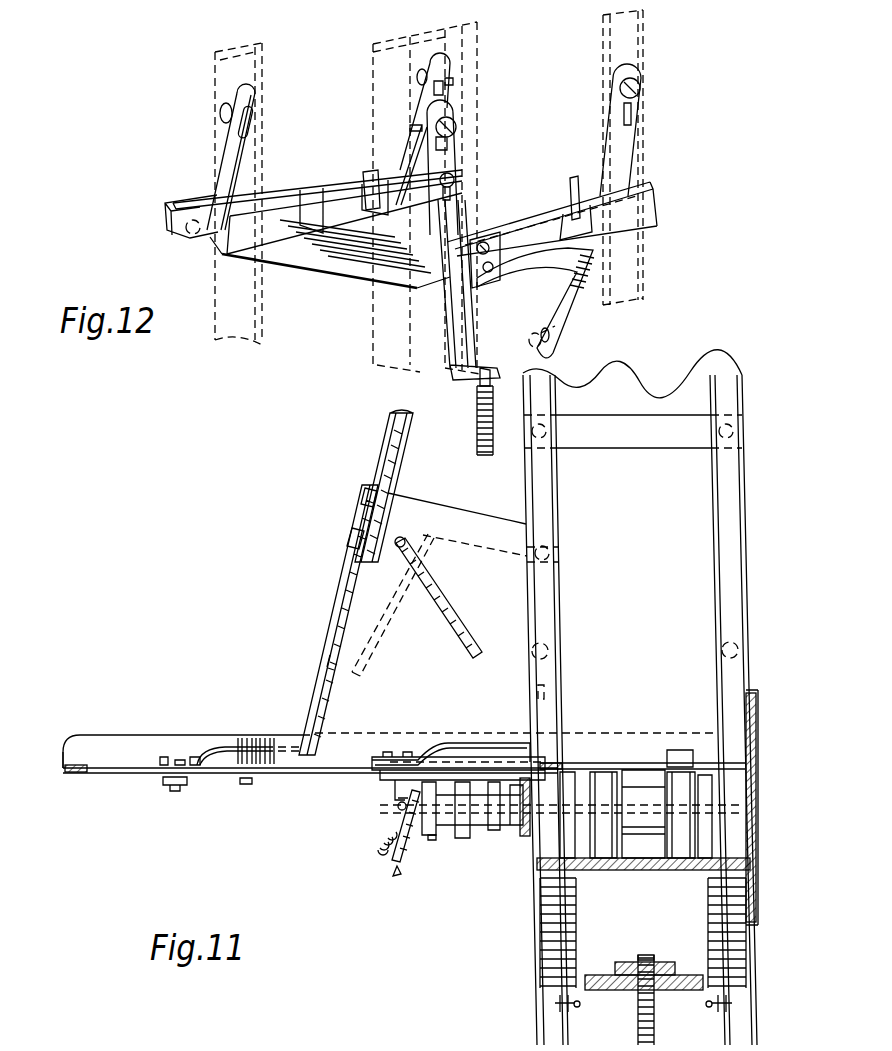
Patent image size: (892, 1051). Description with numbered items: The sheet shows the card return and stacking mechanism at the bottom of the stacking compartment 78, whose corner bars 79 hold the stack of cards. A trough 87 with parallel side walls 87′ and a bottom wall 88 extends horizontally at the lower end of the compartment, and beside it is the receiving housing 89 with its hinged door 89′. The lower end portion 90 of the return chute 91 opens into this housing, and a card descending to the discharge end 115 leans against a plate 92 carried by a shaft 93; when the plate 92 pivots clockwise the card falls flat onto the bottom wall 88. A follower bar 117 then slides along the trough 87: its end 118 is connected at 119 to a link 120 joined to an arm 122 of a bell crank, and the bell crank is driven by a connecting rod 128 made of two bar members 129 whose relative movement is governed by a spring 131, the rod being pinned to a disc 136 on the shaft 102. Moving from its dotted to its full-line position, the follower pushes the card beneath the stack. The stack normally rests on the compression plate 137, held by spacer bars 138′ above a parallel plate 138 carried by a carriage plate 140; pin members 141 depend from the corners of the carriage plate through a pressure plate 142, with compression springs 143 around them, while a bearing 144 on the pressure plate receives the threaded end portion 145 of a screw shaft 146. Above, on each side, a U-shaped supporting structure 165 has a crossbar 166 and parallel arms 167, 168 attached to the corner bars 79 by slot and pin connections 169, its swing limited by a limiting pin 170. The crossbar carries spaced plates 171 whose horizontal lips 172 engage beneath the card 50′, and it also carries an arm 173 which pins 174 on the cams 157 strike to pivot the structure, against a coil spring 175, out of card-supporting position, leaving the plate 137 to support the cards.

In FIG. 12, the corner bars 79 is at (432, 370).
In FIG. 12, the arm 167 is at (630, 140).
In FIG. 11, the arm 167 is at (738, 633).
In FIG. 12, the slot and pin connection 169 is at (640, 82).
In FIG. 12, the limiting pin 170 is at (460, 178).
In FIG. 12, the U-shaped supporting structure 165 is at (658, 205).
In FIG. 12, the crossbar 166 is at (622, 225).
In FIG. 12, the spaced plates 171 is at (576, 200).
In FIG. 12, the arm 173 is at (565, 333).
In FIG. 12, the pins 174 is at (530, 340).
In FIG. 12, the horizontal lips 172 is at (514, 251).
In FIG. 12, the card 50′ is at (337, 283).
In FIG. 12, the arm 168 is at (433, 236).
In FIG. 12, the coil spring 175 is at (477, 430).
In FIG. 11, the stacking compartment 78 is at (688, 508).
In FIG. 11, the shaft 93 is at (404, 538).
In FIG. 11, the return chute 91 is at (381, 421).
In FIG. 11, the lower end portion 90 is at (375, 492).
In FIG. 11, the discharge end 115 is at (356, 538).
In FIG. 11, the receiving housing 89 is at (342, 615).
In FIG. 11, the door 89′ is at (326, 665).
In FIG. 11, the plate 92 is at (450, 606).
In FIG. 11, the trough 87 is at (188, 747).
In FIG. 11, the side walls 87′ is at (128, 738).
In FIG. 11, the bottom wall 88 is at (85, 773).
In FIG. 11, the follower bar 117 is at (240, 735).
In FIG. 11, the end 118 is at (395, 746).
In FIG. 11, the link 120 is at (245, 790).
In FIG. 11, the connection 119 is at (395, 786).
In FIG. 11, the shaft 102 is at (404, 806).
In FIG. 11, the bar members 129 is at (415, 840).
In FIG. 11, the spring 131 is at (390, 840).
In FIG. 11, the disc 136 is at (434, 838).
In FIG. 11, the connecting rod 128 is at (397, 866).
In FIG. 11, the arm 122 is at (550, 770).
In FIG. 11, the cams 157 is at (520, 848).
In FIG. 11, the compression plate 137 is at (680, 760).
In FIG. 11, the spacer bars 138′ is at (718, 805).
In FIG. 11, the plate 138 is at (745, 858).
In FIG. 11, the carriage plate 140 is at (675, 873).
In FIG. 11, the compression springs 143 is at (576, 920).
In FIG. 11, the pressure plate 142 is at (618, 989).
In FIG. 11, the bearing 144 is at (668, 968).
In FIG. 11, the end portion 145 is at (660, 931).
In FIG. 11, the screw shaft 146 is at (655, 1015).
In FIG. 11, the pin members 141 is at (718, 1010).